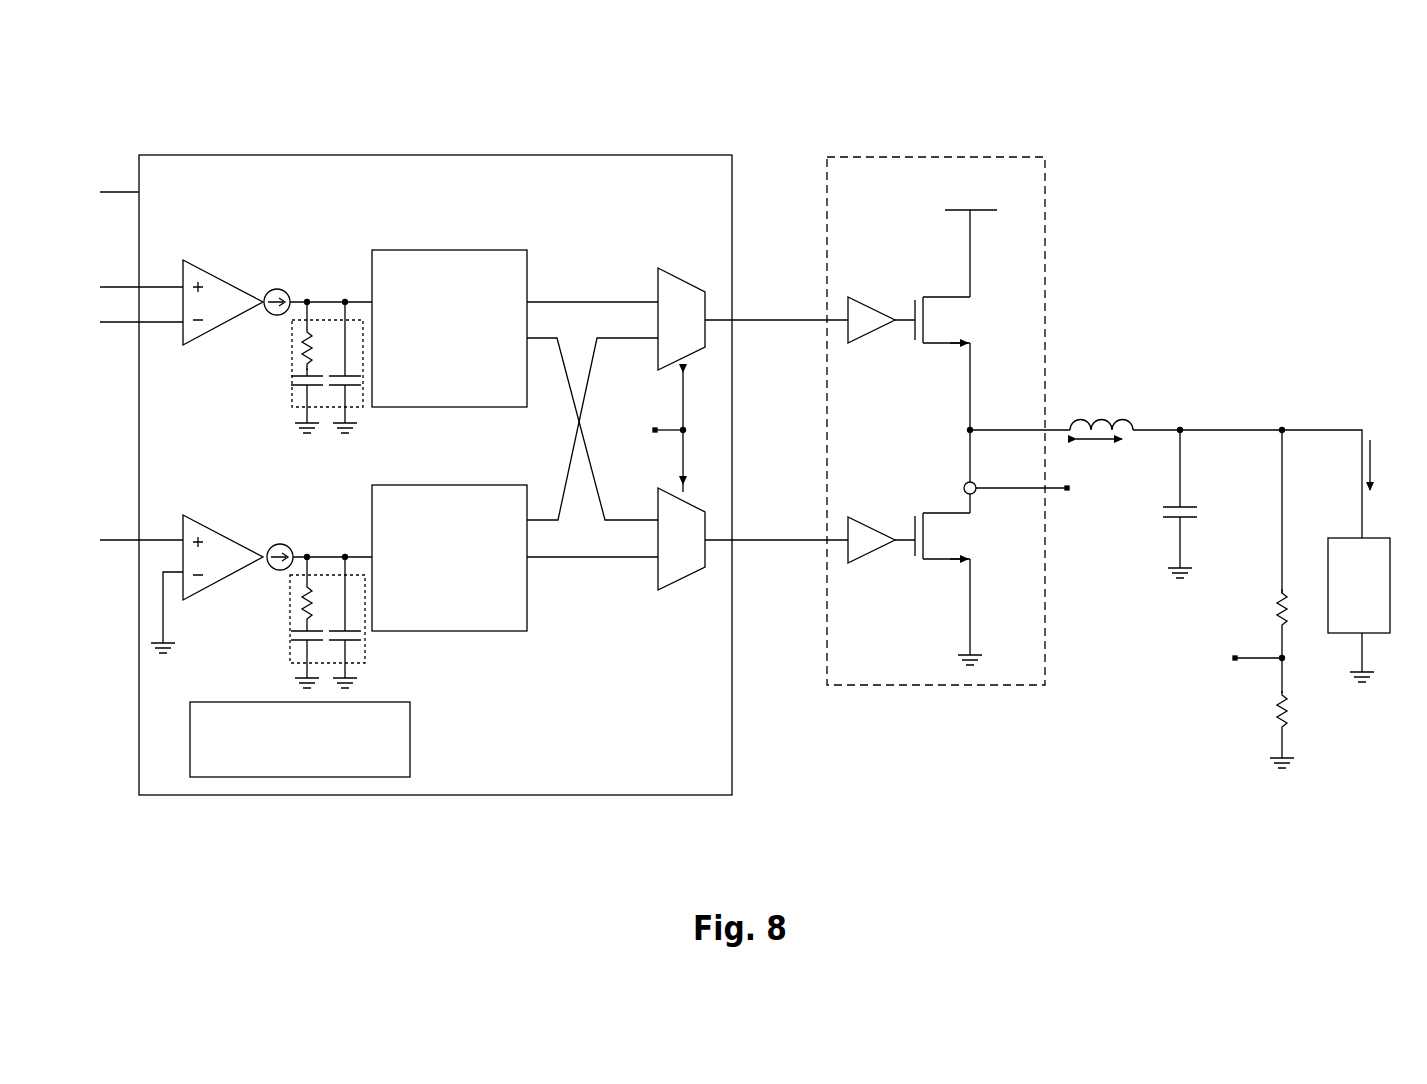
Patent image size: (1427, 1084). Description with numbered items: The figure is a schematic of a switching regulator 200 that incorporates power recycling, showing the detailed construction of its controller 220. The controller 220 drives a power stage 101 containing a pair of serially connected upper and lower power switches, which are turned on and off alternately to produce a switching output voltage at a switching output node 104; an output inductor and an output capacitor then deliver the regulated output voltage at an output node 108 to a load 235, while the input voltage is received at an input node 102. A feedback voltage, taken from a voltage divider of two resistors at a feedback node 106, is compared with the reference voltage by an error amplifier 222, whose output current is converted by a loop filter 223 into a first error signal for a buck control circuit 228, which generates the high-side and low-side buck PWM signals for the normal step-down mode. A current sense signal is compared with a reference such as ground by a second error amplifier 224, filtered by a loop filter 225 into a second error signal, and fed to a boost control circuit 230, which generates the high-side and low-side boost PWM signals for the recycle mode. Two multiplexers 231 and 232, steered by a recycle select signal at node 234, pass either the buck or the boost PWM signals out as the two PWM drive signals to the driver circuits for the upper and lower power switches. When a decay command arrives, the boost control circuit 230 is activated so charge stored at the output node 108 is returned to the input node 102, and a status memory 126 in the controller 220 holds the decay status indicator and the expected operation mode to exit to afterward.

The switching regulator 200 is at (1200, 116).
The controller 220 is at (597, 155).
The power stage 101 is at (1045, 180).
The input node 102 is at (975, 212).
The switching output node 104 is at (972, 433).
The feedback node 106 is at (1284, 660).
The output node 108 is at (1328, 430).
The status memory 126 is at (300, 739).
The error amplifier 222 is at (218, 272).
The loop filter 223 is at (291, 395).
The error amplifier 224 is at (228, 531).
The loop filter 225 is at (290, 650).
The buck control circuit 228 is at (449, 328).
The boost control circuit 230 is at (449, 558).
The multiplexer 231 is at (668, 268).
The multiplexer 232 is at (674, 580).
The recycle select signal node 234 is at (683, 460).
The load 235 is at (1382, 538).